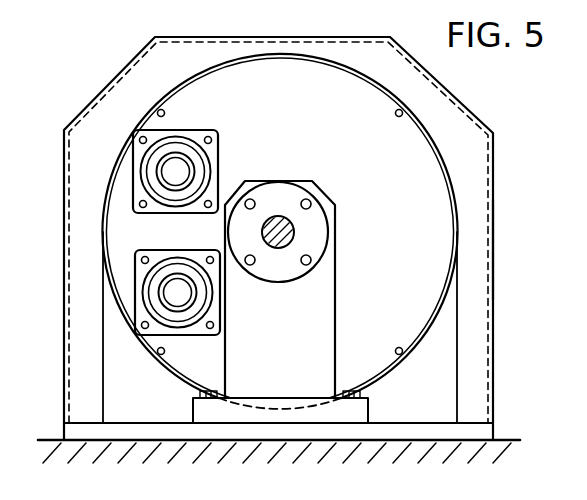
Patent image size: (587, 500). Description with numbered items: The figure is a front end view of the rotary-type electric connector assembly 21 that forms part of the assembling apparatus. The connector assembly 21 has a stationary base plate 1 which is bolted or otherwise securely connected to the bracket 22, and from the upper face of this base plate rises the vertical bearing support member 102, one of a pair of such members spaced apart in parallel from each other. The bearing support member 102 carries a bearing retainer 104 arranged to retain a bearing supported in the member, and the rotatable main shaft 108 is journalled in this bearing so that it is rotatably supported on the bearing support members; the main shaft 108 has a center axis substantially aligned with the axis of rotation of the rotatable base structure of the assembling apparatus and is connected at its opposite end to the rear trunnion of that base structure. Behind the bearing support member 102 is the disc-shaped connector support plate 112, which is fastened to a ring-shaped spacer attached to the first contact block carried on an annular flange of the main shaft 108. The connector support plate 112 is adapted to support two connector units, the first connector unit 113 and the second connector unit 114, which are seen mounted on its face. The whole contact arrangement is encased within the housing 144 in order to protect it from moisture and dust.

The base plate 1 is at (176, 428).
The connector assembly 21 is at (97, 86).
The bracket 22 is at (57, 440).
The bearing support member 102 is at (336, 316).
The bearing retainer 104 is at (277, 192).
The rotatable main shaft 108 is at (295, 232).
The connector support plate 112 is at (391, 194).
The first connector unit 113 is at (180, 150).
The second connector unit 114 is at (198, 301).
The housing 144 is at (494, 251).